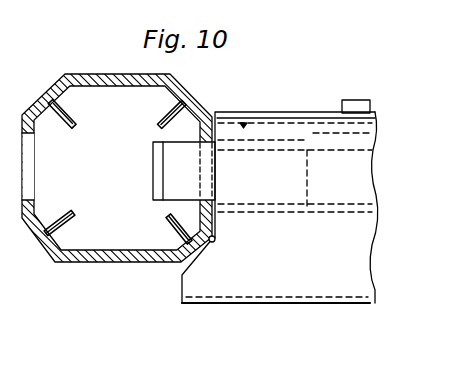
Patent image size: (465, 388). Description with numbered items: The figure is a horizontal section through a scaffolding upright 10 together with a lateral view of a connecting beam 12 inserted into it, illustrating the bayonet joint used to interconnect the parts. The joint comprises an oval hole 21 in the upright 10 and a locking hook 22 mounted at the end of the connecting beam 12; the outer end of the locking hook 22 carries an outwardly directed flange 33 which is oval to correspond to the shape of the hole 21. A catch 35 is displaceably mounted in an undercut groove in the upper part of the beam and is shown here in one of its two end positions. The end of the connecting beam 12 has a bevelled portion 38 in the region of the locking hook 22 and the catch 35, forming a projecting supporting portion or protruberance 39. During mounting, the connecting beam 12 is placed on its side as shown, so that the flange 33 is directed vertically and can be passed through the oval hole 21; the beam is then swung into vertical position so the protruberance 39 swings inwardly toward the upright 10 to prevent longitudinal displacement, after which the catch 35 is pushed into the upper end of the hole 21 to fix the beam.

The upright 10 is at (97, 263).
The connecting beam 12 is at (272, 280).
The hole 21 is at (26, 198).
The locking hook 22 is at (187, 164).
The flange 33 is at (157, 153).
The catch 35 is at (347, 99).
The bevelled portion 38 is at (215, 240).
The protruberance 39 is at (200, 280).